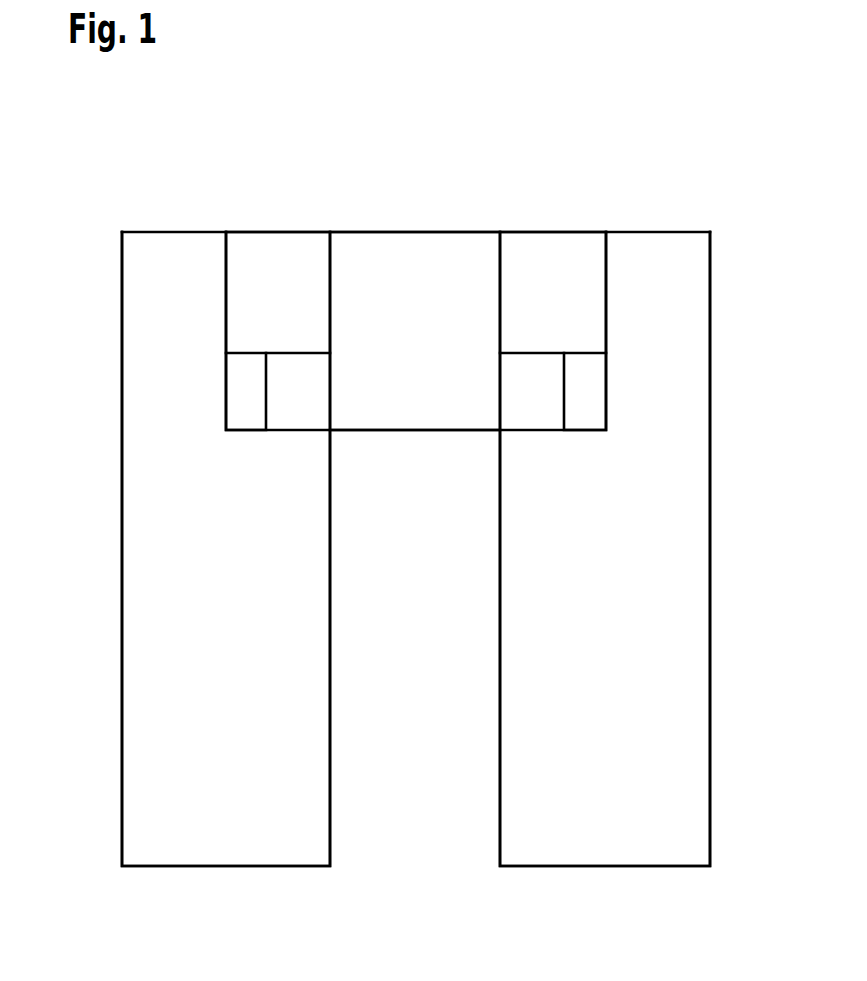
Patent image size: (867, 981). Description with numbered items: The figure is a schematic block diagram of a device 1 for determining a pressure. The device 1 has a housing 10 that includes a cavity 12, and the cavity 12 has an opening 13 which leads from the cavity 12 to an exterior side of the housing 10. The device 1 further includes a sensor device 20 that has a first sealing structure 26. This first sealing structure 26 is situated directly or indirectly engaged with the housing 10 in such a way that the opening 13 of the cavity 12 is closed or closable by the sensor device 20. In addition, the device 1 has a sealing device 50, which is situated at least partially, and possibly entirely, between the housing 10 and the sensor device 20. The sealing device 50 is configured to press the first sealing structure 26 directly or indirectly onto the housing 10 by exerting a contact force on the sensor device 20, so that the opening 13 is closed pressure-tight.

The device 1 is at (188, 192).
The housing 10 is at (170, 494).
The cavity 12 is at (418, 805).
The opening 13 is at (422, 442).
The sensor device 20 is at (413, 254).
The first sealing structure 26 is at (536, 393).
The sealing device 50 is at (263, 300).